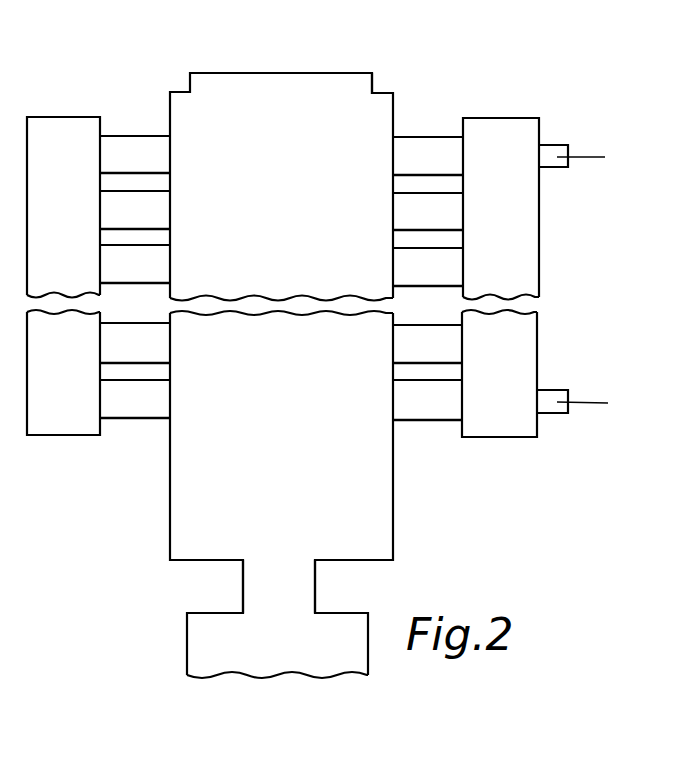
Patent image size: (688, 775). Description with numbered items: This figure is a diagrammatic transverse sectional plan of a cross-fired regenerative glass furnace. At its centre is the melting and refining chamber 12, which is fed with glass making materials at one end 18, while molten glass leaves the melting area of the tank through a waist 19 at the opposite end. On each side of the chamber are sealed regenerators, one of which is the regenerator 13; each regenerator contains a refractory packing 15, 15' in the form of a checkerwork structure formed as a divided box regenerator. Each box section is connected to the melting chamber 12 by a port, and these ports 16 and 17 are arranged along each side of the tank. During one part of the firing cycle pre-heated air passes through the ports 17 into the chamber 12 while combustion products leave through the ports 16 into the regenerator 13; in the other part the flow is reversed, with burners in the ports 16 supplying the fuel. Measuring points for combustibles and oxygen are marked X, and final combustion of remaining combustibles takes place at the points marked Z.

The melting and refining chamber 12 is at (291, 472).
The regenerator 13 is at (512, 117).
The refractory packing 15 is at (548, 407).
The refractory packing 15' is at (53, 310).
The ports 16 is at (402, 163).
The ports 17 is at (165, 165).
The end 18 is at (345, 70).
The waist 19 is at (273, 566).